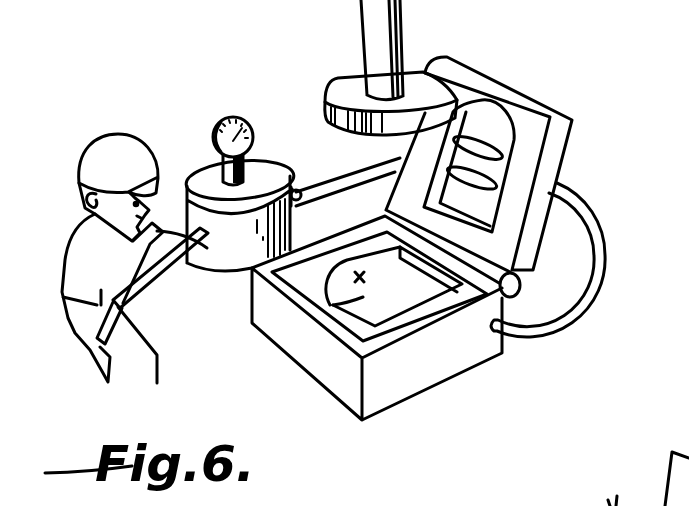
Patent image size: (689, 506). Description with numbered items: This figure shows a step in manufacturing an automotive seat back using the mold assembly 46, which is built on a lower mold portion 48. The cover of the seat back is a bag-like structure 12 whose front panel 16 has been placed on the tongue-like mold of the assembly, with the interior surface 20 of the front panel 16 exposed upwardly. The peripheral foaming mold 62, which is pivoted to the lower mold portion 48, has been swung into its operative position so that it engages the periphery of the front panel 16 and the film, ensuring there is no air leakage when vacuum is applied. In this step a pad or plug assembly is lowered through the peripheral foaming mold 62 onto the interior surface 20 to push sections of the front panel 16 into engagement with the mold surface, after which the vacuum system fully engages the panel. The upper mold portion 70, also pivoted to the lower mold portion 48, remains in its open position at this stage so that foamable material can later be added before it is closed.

The bag-like structure 12 is at (246, 266).
The front panel 16 is at (290, 347).
The interior surface 20 is at (397, 293).
The mold assembly 46 is at (558, 96).
The lower mold portion 48 is at (340, 382).
The peripheral foaming mold 62 is at (366, 322).
The upper mold portion 70 is at (549, 162).